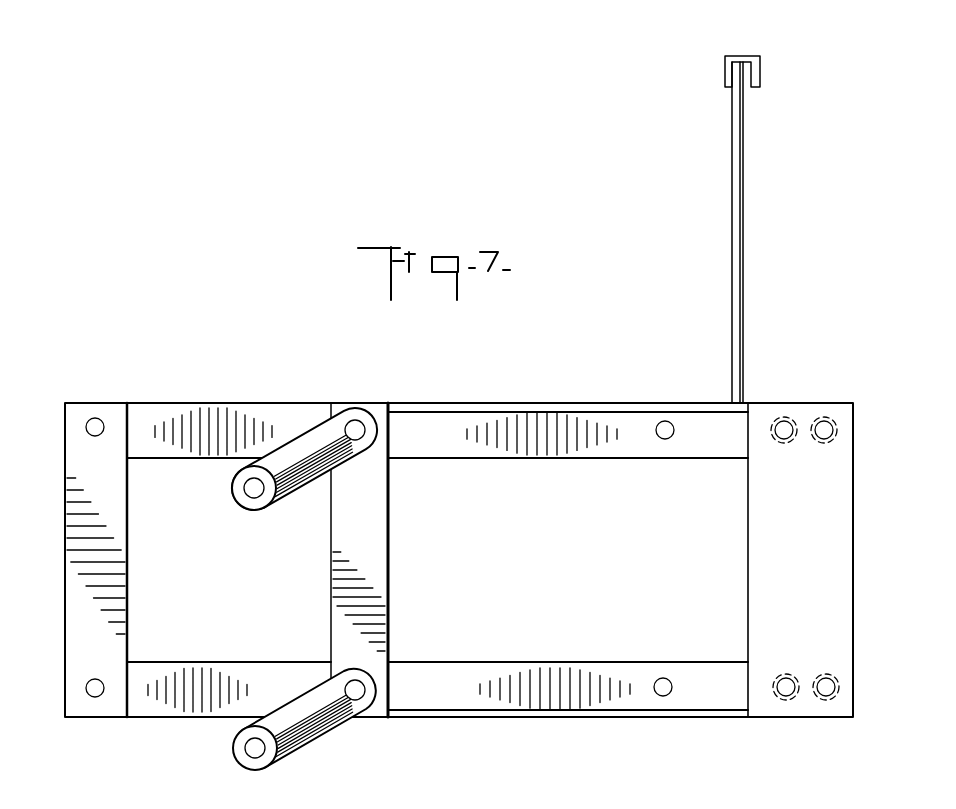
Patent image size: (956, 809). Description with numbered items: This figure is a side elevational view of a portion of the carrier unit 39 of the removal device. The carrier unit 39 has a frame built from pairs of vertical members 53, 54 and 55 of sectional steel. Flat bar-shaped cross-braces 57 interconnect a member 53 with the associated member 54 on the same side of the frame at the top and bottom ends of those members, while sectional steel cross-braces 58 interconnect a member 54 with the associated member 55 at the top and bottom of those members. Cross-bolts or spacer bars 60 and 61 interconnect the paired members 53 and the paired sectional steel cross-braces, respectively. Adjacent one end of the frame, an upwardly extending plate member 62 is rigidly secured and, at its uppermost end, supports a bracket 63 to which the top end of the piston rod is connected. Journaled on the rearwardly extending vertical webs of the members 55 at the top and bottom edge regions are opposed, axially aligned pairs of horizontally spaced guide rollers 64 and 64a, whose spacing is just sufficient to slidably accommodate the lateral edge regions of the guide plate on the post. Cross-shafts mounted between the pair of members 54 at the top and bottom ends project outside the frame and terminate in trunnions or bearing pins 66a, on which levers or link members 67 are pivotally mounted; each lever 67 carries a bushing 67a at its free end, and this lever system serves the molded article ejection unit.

The carrier unit 39 is at (518, 397).
The vertical member 53 is at (120, 552).
The vertical member 54 is at (340, 615).
The vertical member 55 is at (838, 560).
The cross-brace 57 is at (172, 449).
The cross-brace 58 is at (571, 452).
The cross-bolt or spacer bar 60 is at (97, 419).
The cross-bolt or spacer bar 61 is at (665, 421).
The plate member 62 is at (744, 224).
The bracket 63 is at (757, 63).
The guide roller 64 is at (786, 417).
The guide roller 64a is at (826, 417).
The trunnion or bearing pin 66a is at (361, 421).
The lever or link member 67 is at (294, 426).
The bushing 67a is at (253, 511).